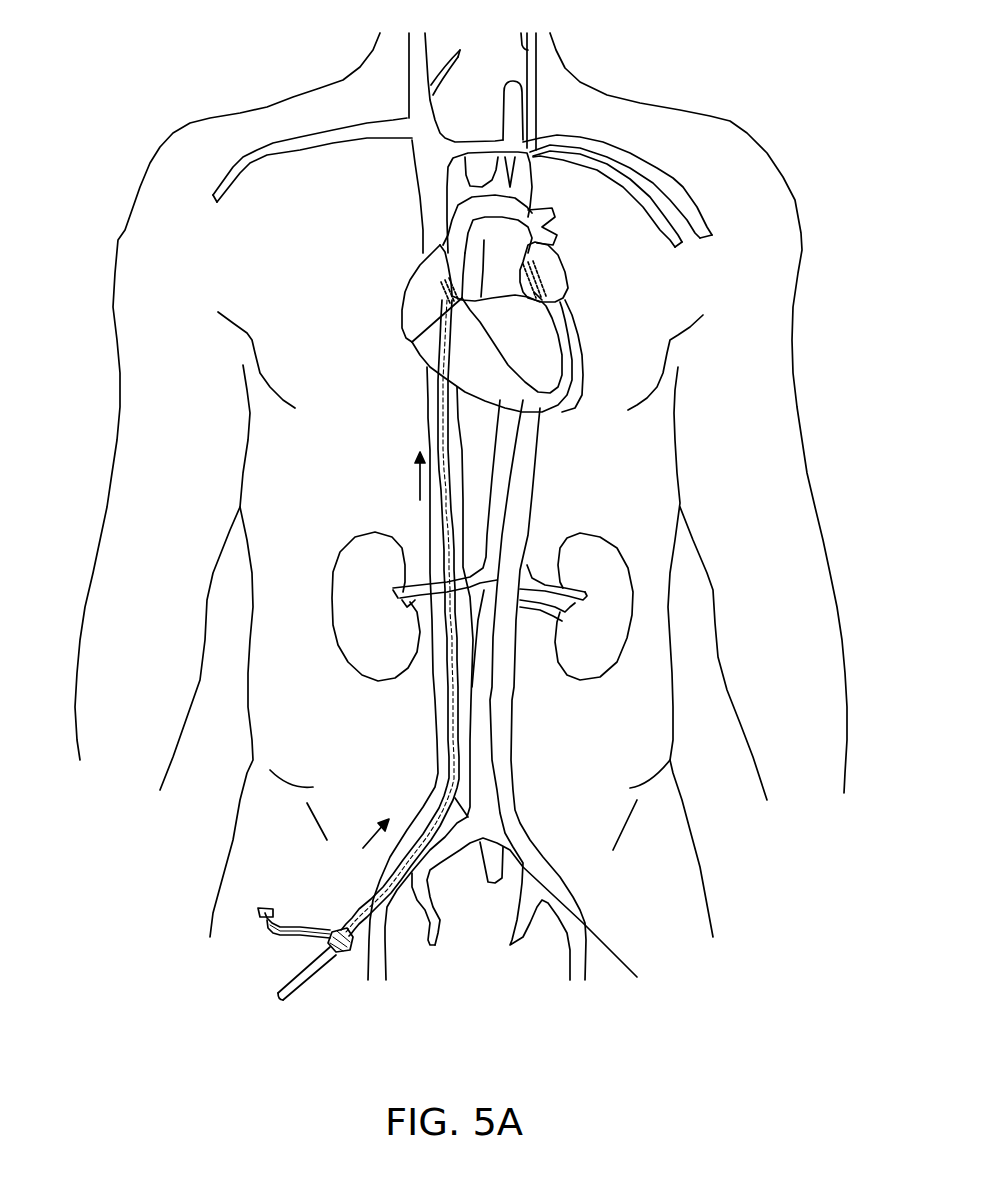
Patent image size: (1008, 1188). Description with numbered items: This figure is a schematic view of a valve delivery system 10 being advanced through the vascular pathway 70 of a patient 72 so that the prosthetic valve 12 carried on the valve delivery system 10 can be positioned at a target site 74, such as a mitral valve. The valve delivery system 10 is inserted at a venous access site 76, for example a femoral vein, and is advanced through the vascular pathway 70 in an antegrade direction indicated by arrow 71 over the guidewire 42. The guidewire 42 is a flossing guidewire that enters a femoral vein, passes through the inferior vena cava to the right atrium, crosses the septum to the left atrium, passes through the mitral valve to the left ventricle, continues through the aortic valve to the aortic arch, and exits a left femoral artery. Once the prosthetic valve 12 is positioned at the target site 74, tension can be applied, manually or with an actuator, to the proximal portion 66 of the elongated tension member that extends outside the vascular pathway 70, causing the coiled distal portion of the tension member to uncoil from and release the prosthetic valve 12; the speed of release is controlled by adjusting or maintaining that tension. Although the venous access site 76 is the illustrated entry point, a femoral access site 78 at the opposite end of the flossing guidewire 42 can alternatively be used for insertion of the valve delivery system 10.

The valve delivery system 10 is at (430, 300).
The prosthetic valve 12 is at (557, 283).
The guidewire 42 is at (565, 354).
The proximal portion of the elongated tension member 66 is at (325, 958).
The vascular pathway 70 is at (437, 737).
The arrow 71 is at (418, 473).
The patient 72 is at (730, 119).
The target site 74 is at (553, 297).
The venous access site 76 is at (343, 930).
The femoral access site 78 is at (585, 923).